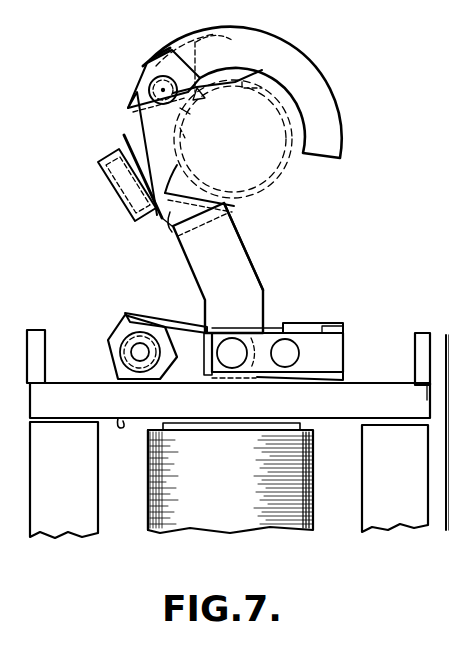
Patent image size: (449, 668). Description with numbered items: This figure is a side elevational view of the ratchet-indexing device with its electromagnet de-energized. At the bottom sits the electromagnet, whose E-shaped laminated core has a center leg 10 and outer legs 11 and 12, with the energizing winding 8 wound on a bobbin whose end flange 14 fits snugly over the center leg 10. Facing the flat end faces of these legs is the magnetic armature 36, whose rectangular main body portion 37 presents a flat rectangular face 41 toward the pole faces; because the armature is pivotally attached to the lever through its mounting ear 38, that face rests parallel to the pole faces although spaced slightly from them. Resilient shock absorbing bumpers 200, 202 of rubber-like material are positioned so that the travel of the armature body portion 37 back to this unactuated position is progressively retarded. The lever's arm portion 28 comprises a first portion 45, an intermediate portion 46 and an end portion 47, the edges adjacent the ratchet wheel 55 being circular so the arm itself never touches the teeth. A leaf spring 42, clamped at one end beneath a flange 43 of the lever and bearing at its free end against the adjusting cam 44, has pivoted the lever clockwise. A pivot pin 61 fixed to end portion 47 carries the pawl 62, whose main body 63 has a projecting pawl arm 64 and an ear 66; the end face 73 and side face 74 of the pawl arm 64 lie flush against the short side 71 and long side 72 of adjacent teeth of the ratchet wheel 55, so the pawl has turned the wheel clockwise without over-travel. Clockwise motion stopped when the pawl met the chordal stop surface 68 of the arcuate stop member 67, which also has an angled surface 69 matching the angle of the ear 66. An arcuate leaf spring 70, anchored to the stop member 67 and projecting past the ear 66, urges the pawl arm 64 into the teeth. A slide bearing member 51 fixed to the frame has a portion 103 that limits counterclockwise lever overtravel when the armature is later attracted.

The energizing winding 8 is at (243, 486).
The center leg 10 is at (266, 423).
The outer leg 11 is at (73, 486).
The outer leg 12 is at (397, 486).
The end flange 14 is at (148, 430).
The arm portion 28 is at (254, 262).
The magnetic armature 36 is at (374, 381).
The main body portion 37 is at (344, 412).
The mounting ear 38 is at (204, 366).
The flat rectangular face 41 is at (116, 411).
The leaf spring 42 is at (182, 330).
The flange 43 is at (316, 323).
The adjusting cam 44 is at (110, 348).
The first portion 45 is at (231, 285).
The intermediate portion 46 is at (168, 224).
The end portion 47 is at (200, 36).
The slide bearing member 51 is at (122, 136).
The ratchet wheel 55 is at (284, 176).
The pivot pin 61 is at (157, 83).
The pawl 62 is at (143, 100).
The main body 63 is at (140, 112).
The pawl arm 64 is at (236, 90).
The ear 66 is at (140, 68).
The arcuate stop member 67 is at (300, 56).
The stop surface 68 is at (196, 58).
The surface 69 is at (162, 53).
The arcuate leaf spring 70 is at (150, 58).
The short side 71 is at (186, 136).
The long side 72 is at (190, 116).
The end face 73 is at (222, 85).
The side face 74 is at (202, 96).
The stop portion 103 is at (120, 208).
The shock absorbing bumper 200 is at (44, 332).
The shock absorbing bumper 202 is at (421, 332).